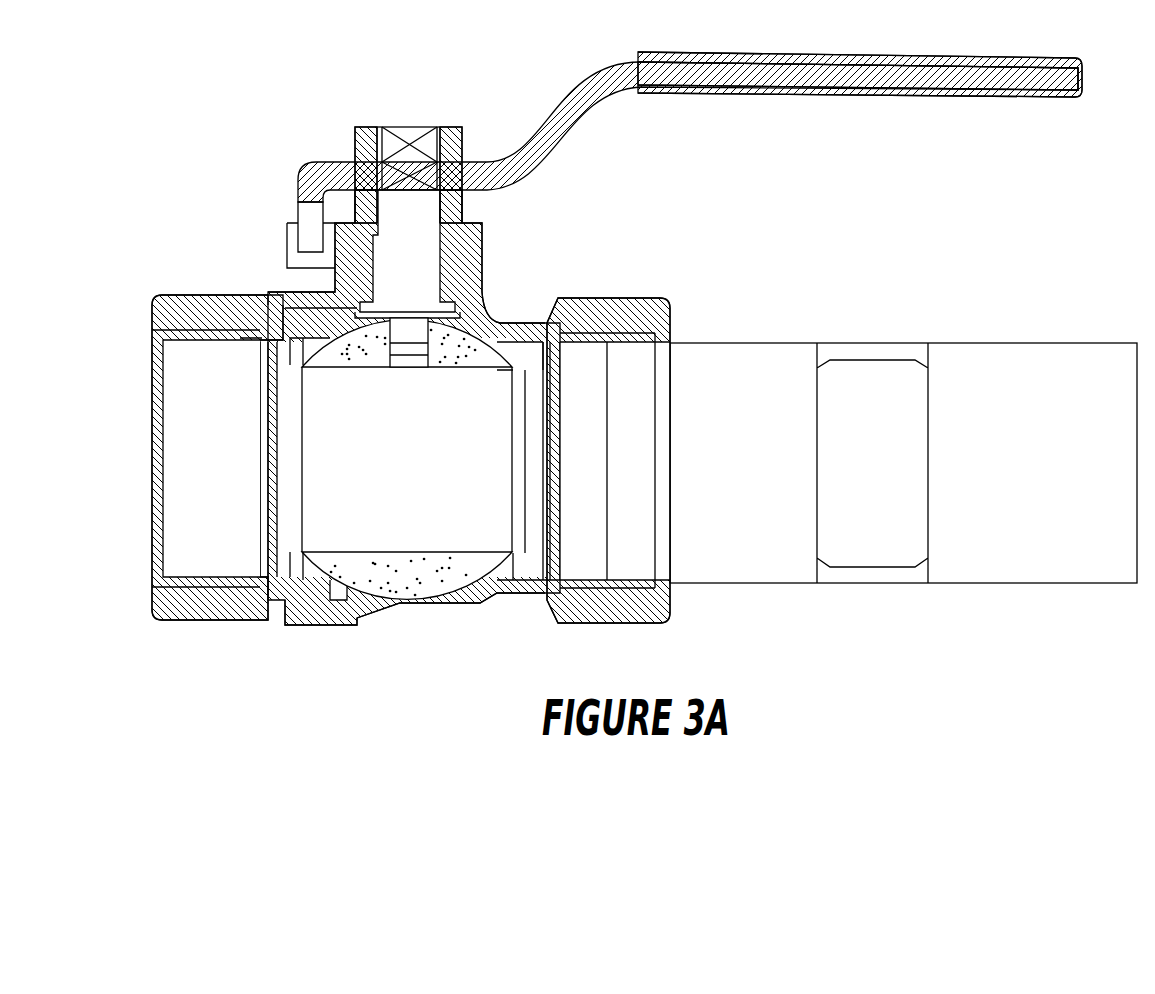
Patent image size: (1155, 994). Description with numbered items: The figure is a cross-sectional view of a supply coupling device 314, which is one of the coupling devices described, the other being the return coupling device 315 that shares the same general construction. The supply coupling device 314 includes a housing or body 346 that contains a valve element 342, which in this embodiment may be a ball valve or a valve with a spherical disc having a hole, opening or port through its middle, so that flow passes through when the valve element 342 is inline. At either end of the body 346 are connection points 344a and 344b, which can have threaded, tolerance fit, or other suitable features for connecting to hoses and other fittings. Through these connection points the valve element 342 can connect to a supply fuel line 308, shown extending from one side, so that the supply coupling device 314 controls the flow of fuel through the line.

The supply fuel line 308 is at (1083, 571).
The supply coupling device 314 is at (207, 649).
The return coupling device 315 is at (715, 68).
The valve element 342 is at (484, 312).
The connection point 344a is at (178, 315).
The connection point 344b is at (655, 608).
The housing or body 346 is at (267, 303).